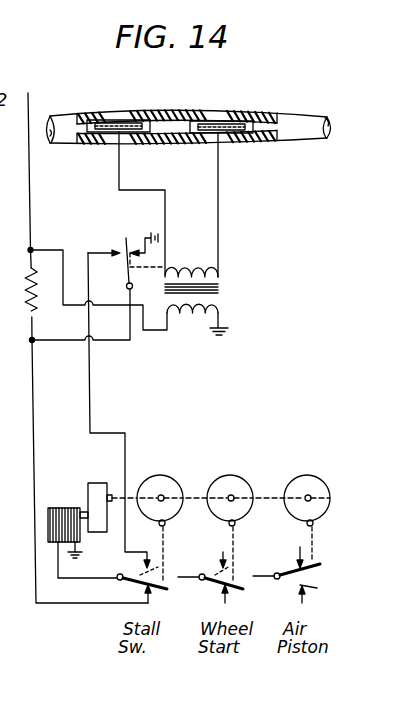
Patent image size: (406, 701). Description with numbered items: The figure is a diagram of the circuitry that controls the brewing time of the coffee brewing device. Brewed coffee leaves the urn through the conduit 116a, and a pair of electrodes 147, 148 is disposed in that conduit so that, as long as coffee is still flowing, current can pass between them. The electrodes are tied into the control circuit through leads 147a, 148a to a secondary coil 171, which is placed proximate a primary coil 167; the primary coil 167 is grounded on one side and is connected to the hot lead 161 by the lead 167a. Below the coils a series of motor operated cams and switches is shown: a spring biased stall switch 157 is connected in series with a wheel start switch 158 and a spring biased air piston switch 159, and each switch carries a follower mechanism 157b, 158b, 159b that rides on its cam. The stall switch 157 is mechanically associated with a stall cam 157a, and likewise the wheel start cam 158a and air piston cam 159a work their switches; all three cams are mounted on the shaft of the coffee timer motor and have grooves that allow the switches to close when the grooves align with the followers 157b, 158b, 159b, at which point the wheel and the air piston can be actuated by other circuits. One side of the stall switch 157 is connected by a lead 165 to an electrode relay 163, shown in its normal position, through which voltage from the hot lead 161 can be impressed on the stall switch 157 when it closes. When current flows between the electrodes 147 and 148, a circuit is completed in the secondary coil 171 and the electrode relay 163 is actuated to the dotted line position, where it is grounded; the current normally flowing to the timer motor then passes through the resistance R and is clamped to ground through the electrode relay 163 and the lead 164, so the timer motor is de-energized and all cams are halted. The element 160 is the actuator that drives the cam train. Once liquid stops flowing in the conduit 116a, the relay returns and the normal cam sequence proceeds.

The conduit 116a is at (298, 117).
The electrode 147 is at (119, 119).
The electrode 148 is at (218, 124).
The lead 147a is at (135, 188).
The lead wire from contact 148 148a is at (220, 182).
The hot lead 161 is at (28, 175).
The resistance R is at (22, 302).
The lead 167a is at (48, 250).
The electrode relay 163 is at (126, 245).
The secondary coil 171 is at (203, 258).
The primary coil 167 is at (198, 315).
The lead 164 is at (65, 341).
The lead 165 is at (92, 410).
The solenoid 160 is at (58, 508).
The stall cam 157a is at (157, 478).
The wheel start cam 158a is at (230, 464).
The air piston cam 159a is at (305, 476).
The follower mechanism 157b is at (163, 554).
The follower mechanism 158b is at (248, 547).
The follower mechanism 159b is at (306, 538).
The stall switch 157 is at (135, 583).
The wheel start switch 158 is at (215, 584).
The air piston switch 159 is at (293, 581).